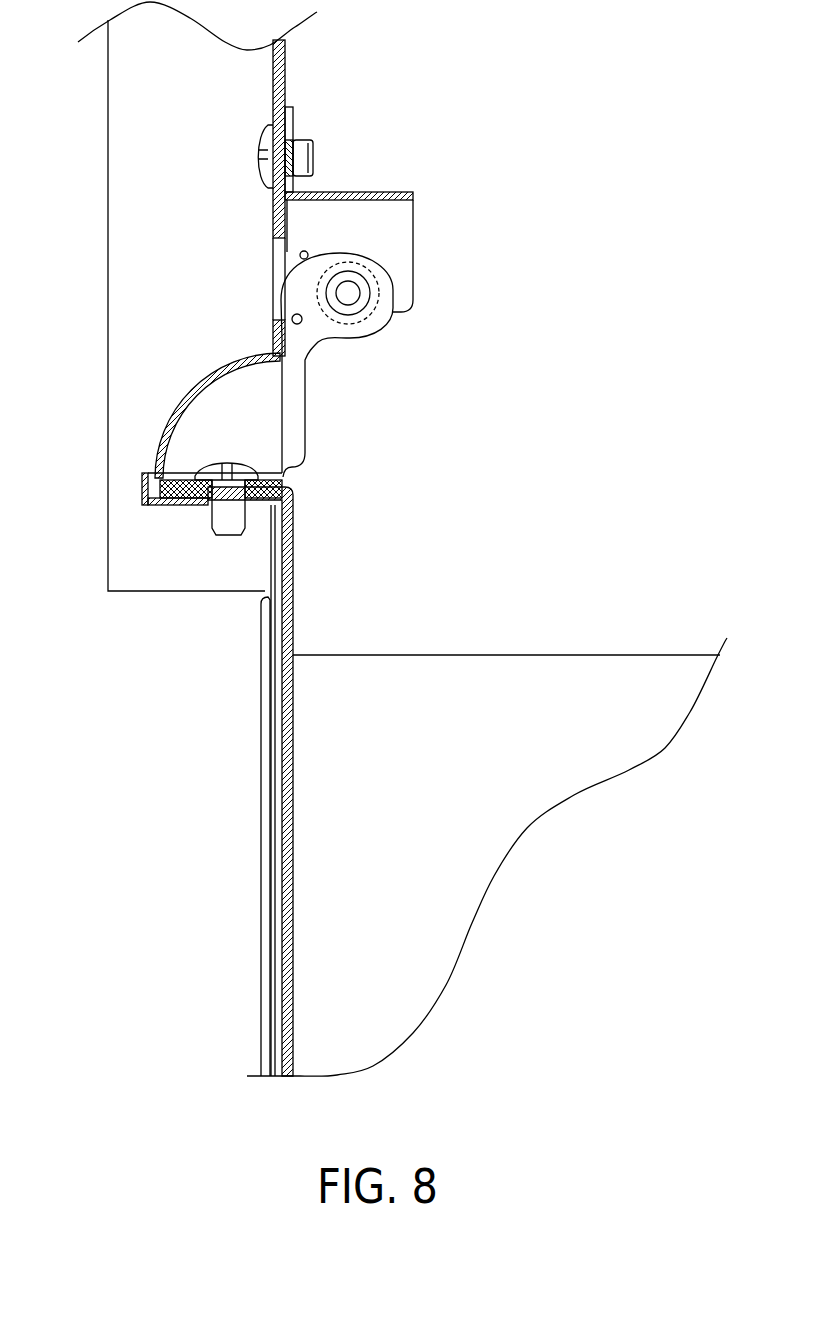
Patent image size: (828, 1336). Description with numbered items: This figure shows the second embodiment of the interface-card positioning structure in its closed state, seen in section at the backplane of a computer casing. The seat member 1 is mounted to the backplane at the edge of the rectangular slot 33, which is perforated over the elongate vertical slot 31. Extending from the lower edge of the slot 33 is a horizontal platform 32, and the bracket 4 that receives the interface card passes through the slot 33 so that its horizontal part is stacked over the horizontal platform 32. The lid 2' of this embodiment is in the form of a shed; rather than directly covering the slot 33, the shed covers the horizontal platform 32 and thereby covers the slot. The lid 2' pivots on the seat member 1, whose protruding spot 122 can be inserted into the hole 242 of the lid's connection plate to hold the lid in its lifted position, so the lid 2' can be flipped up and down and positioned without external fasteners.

The seat member 1 is at (431, 169).
The protruding spot 122 is at (308, 252).
The rectangular slot 33 is at (280, 275).
The lid 2' is at (176, 415).
The hole 242 is at (300, 325).
The horizontal platform 32 is at (150, 508).
The bracket 4 is at (293, 573).
The vertical slot 31 is at (278, 717).